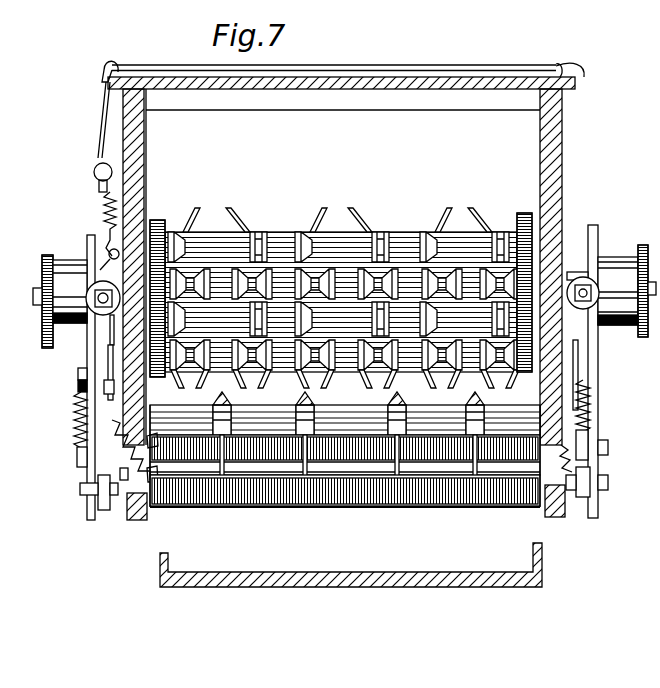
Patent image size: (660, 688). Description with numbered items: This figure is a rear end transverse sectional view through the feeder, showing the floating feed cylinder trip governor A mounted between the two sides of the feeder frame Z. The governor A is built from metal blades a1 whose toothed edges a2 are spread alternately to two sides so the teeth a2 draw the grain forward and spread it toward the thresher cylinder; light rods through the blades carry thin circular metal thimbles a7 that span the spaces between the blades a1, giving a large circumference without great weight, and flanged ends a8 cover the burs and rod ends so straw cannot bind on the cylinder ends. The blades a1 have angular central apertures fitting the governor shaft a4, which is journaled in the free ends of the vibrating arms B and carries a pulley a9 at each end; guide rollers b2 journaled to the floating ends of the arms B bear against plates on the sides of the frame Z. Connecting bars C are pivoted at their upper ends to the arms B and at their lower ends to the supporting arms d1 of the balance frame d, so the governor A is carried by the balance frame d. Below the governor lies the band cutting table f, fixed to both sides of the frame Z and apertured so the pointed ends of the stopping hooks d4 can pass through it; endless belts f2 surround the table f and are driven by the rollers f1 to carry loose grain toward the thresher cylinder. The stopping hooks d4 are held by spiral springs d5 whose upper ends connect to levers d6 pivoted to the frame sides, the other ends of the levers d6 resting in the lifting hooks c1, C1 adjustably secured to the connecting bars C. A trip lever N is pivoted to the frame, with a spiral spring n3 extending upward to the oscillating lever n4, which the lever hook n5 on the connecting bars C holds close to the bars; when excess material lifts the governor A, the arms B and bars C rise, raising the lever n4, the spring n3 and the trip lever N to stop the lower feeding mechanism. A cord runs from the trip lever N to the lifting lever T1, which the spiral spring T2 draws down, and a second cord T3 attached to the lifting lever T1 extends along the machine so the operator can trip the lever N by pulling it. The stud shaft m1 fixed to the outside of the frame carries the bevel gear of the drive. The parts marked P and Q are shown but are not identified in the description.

The feeder frame Z is at (147, 145).
The cord T3 is at (288, 64).
The lifting lever T1 is at (98, 189).
The spiral spring T2 is at (103, 212).
The feed cylinder trip governor A is at (340, 250).
The flanged end a8 is at (158, 220).
The thin circular metal thimble a7 is at (478, 376).
The metal blade a1 is at (302, 232).
The teeth a2 is at (392, 232).
The band cutting table f is at (214, 394).
The roller f1 is at (298, 394).
The endless belt f2 is at (364, 414).
The spiral spring d5 is at (575, 446).
The stopping hook d4 is at (478, 458).
The balance frame d is at (257, 509).
The screen bottom Q is at (372, 502).
The pan P is at (290, 578).
The pulley a9 is at (48, 256).
The vibrating arm B is at (577, 272).
The connecting bar C is at (88, 347).
The governor shaft a4 is at (575, 340).
The lifting hook c1 is at (115, 354).
The oscillating lever n4 is at (119, 385).
The lever hook n5 is at (80, 372).
The lever d6 is at (80, 388).
The spiral spring n3 is at (74, 426).
The trip lever N is at (74, 445).
The lifting hook C1 is at (77, 457).
The supporting arm d1 is at (98, 492).
The guide roller b2 is at (44, 346).
The stud shaft m1 is at (659, 192).